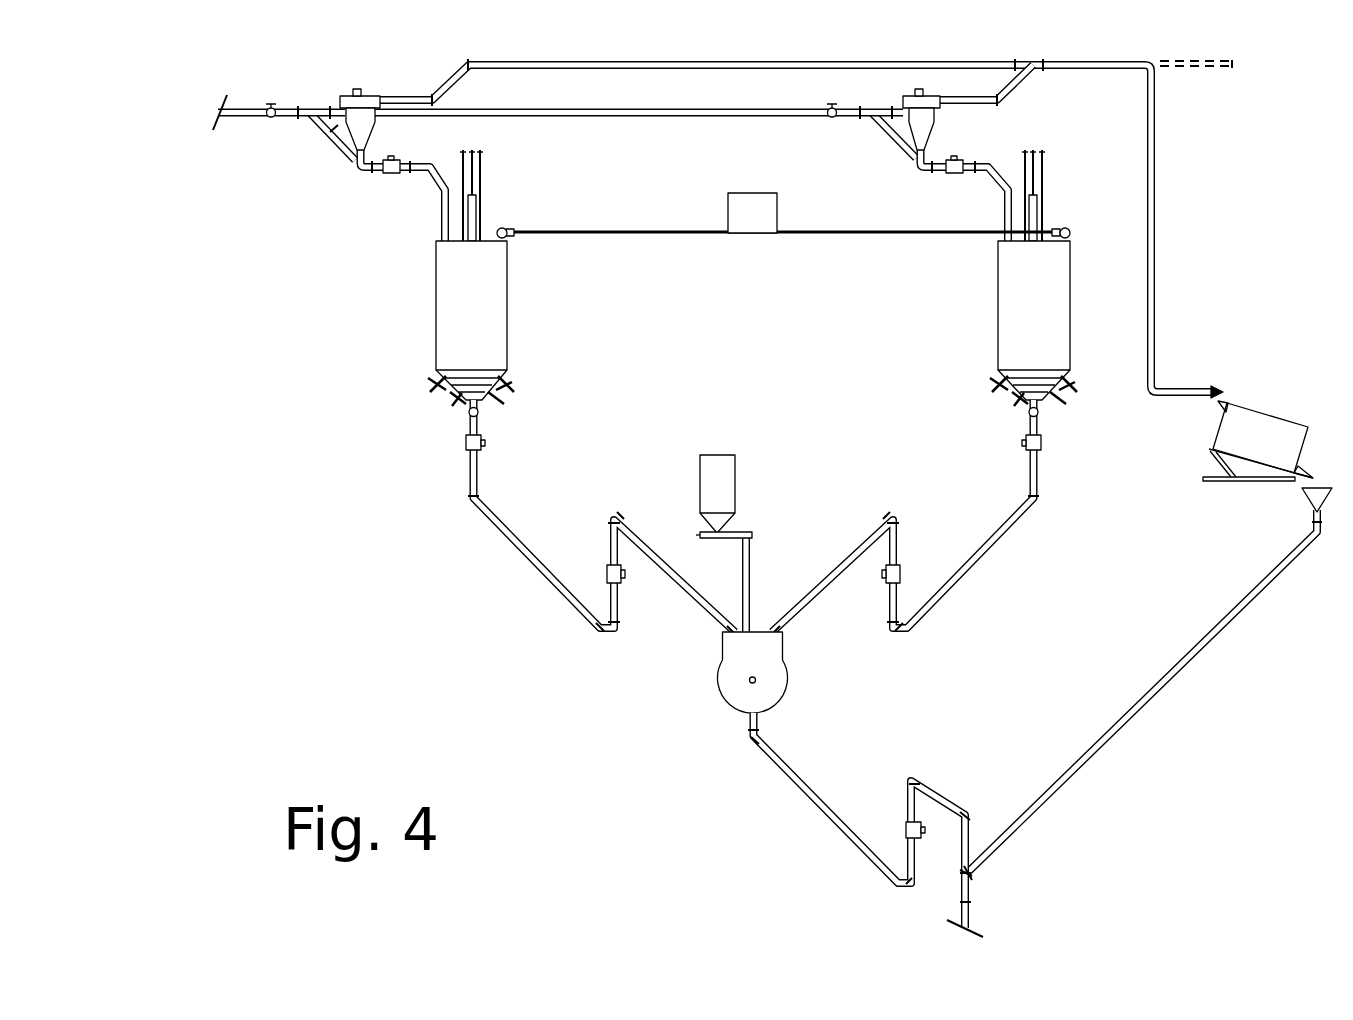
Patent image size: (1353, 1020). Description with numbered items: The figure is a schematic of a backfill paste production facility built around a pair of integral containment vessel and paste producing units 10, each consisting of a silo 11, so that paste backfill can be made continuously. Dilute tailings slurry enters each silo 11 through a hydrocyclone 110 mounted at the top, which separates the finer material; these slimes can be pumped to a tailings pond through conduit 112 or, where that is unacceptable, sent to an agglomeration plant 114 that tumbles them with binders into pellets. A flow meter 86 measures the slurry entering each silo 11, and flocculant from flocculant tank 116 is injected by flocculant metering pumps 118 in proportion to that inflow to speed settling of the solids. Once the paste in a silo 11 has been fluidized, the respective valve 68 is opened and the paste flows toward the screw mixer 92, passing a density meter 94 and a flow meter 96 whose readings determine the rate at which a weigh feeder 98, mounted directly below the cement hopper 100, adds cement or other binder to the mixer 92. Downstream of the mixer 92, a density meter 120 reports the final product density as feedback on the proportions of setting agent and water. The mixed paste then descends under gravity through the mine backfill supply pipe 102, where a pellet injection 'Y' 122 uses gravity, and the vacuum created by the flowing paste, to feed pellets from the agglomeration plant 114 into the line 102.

The integral containment vessel and high density slurry or paste producing unit 10 is at (731, 278).
The silo 11 is at (500, 305).
The valve 68 is at (480, 412).
The flow meter 86 is at (391, 175).
The screw mixer 92 is at (786, 660).
The density meter 94 is at (485, 443).
The flow meter 96 is at (606, 572).
The weigh feeder 98 is at (754, 527).
The cement hopper 100 is at (726, 483).
The mine backfill supply pipe 102 is at (946, 791).
The hydrocyclone 110 is at (358, 127).
The conduit 112 is at (1203, 68).
The agglomeration plant 114 is at (1263, 428).
The flocculant tank 116 is at (770, 202).
The flocculant metering pump 118 is at (506, 227).
The density meter 120 is at (906, 830).
The pellet injection 'Y' 122 is at (970, 891).